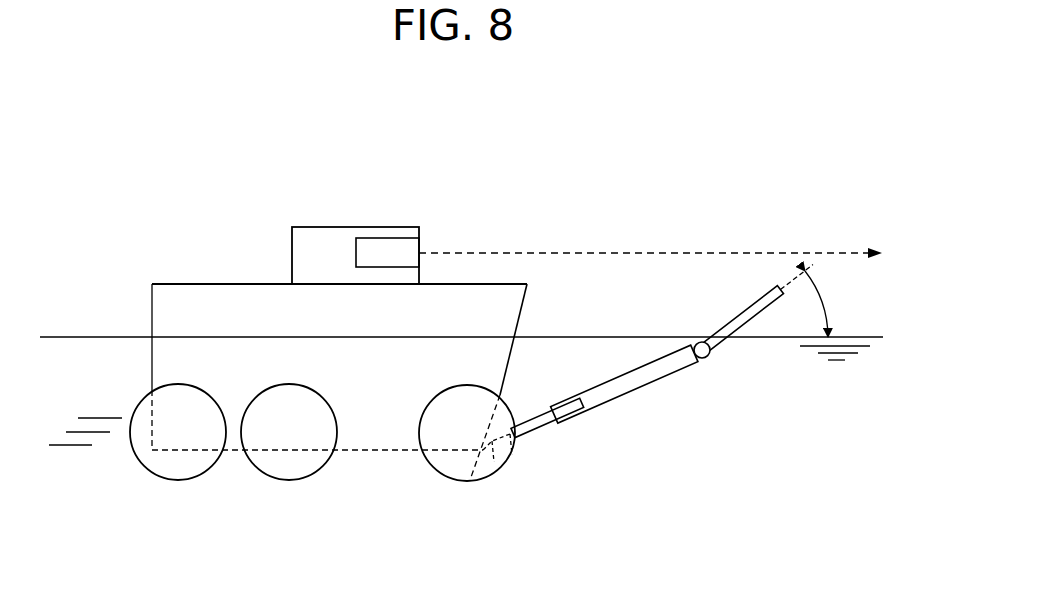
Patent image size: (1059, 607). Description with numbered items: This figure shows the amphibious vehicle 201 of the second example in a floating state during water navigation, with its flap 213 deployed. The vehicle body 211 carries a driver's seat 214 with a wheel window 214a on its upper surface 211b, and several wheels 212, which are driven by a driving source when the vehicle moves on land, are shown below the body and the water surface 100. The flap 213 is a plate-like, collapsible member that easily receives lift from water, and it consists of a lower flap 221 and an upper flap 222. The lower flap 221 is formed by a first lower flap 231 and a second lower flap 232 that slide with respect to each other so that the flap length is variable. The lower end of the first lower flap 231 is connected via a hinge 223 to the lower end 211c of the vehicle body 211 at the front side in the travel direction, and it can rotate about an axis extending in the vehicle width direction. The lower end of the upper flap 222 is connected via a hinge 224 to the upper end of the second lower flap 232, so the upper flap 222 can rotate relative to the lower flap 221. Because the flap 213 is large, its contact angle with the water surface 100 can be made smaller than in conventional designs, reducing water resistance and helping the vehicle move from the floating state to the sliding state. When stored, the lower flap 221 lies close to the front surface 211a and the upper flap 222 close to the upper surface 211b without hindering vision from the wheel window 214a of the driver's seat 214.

The water surface 100 is at (90, 336).
The amphibious vehicle 201 is at (572, 190).
The vehicle body 211 is at (401, 385).
The front surface 211a is at (518, 318).
The upper surface 211b is at (473, 283).
The lower end 211c is at (470, 481).
The wheel 212 is at (447, 478).
The flap 213 is at (663, 418).
The driver's seat 214 is at (355, 214).
The wheel window 214a is at (391, 237).
The lower flap 221 is at (604, 460).
The upper flap 222 is at (763, 306).
The hinge 223 is at (492, 456).
The hinge 224 is at (705, 359).
The first lower flap 231 is at (532, 434).
The second lower flap 232 is at (612, 399).